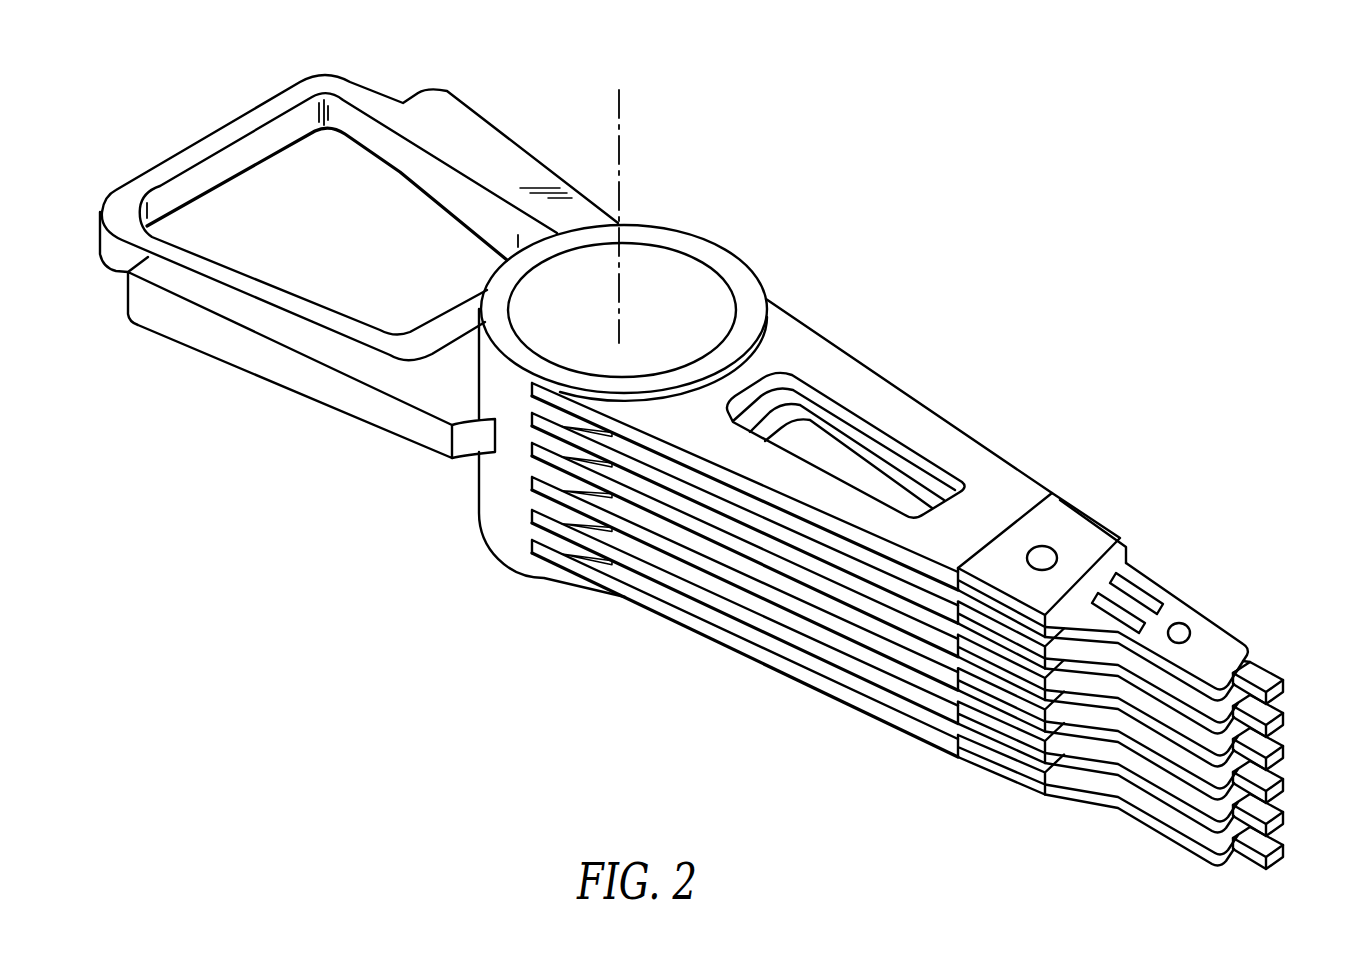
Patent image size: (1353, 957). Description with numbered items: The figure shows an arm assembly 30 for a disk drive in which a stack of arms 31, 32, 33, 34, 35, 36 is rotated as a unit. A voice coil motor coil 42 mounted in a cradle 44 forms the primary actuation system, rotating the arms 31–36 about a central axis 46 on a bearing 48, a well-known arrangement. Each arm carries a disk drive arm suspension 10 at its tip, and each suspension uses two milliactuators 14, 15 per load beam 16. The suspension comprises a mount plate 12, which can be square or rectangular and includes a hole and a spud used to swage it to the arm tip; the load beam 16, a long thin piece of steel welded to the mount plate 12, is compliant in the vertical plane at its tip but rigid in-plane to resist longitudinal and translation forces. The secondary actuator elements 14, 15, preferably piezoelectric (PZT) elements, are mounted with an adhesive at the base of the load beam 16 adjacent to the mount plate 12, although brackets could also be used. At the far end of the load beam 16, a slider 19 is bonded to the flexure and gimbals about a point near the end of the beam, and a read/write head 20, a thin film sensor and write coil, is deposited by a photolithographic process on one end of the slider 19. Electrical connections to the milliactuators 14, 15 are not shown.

The disk drive arm suspension 10 is at (1098, 518).
The mount plate 12 is at (1052, 504).
The secondary actuator element 14 is at (1130, 587).
The secondary actuator element 15 is at (1140, 620).
The load beam 16 is at (1218, 630).
The slider 19 is at (1257, 661).
The read/write head 20 is at (1285, 680).
The arm assembly 30 is at (855, 132).
The arm 31 is at (900, 397).
The arm 32 is at (712, 500).
The arm 33 is at (740, 542).
The arm 34 is at (765, 587).
The arm 35 is at (780, 627).
The arm 36 is at (803, 667).
The voice coil motor coil 42 is at (203, 133).
The cradle 44 is at (240, 355).
The central axis 46 is at (621, 168).
The bearing 48 is at (692, 278).